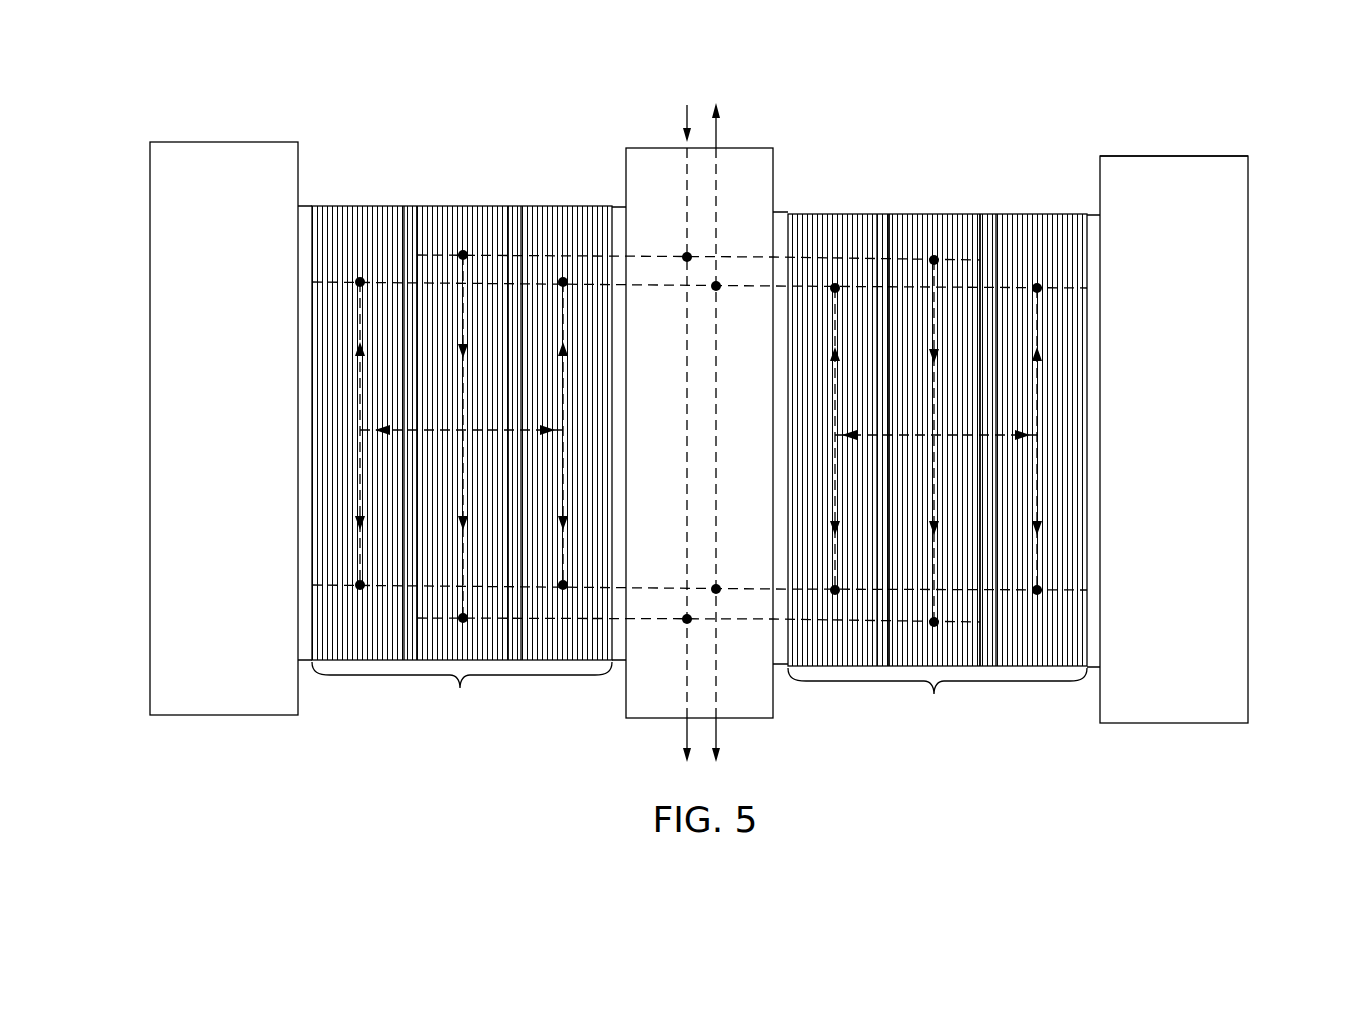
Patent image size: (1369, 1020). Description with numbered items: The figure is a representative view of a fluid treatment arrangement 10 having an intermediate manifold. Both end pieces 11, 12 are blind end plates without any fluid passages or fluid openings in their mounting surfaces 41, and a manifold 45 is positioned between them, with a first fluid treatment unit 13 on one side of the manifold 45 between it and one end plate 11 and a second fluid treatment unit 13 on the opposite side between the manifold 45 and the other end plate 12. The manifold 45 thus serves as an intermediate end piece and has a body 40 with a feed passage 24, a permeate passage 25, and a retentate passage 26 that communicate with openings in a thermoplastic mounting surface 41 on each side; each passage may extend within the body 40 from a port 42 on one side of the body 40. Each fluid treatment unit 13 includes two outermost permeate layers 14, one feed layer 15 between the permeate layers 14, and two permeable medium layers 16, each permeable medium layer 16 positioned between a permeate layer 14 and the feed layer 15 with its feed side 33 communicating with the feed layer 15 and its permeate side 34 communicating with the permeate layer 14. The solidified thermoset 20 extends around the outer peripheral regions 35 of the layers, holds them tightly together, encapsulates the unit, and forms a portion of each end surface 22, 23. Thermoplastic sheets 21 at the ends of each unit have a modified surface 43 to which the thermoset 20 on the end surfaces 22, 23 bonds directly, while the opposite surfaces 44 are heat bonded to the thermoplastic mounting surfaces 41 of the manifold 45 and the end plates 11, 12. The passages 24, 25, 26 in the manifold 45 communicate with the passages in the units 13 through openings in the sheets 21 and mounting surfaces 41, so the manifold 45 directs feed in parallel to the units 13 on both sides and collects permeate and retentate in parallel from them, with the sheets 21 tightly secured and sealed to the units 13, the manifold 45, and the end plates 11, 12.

The fluid treatment arrangement 10 is at (1158, 140).
The end piece 11 is at (185, 165).
The end piece 12 is at (1165, 185).
The fluid treatment unit 13 is at (699, 691).
The permeate layer 14 is at (348, 225).
The feed layer 15 is at (437, 222).
The permeable medium layer 16 is at (410, 222).
The solidified thermoset 20 is at (698, 436).
The thermoplastic sheet 21 is at (300, 243).
The end surface 22 is at (312, 360).
The end surface 23 is at (605, 535).
The feed passage 24 is at (687, 182).
The permeate passage 25 is at (385, 587).
The retentate passage 26 is at (687, 673).
The feed side 33 is at (490, 230).
The permeate side 34 is at (400, 243).
The outer peripheral region 35 is at (430, 487).
The body 40 is at (702, 383).
The mounting surface 41 is at (298, 400).
The port 42 is at (717, 142).
The modified surface 43 is at (310, 312).
The opposite surface 44 is at (298, 315).
The manifold 45 is at (733, 175).